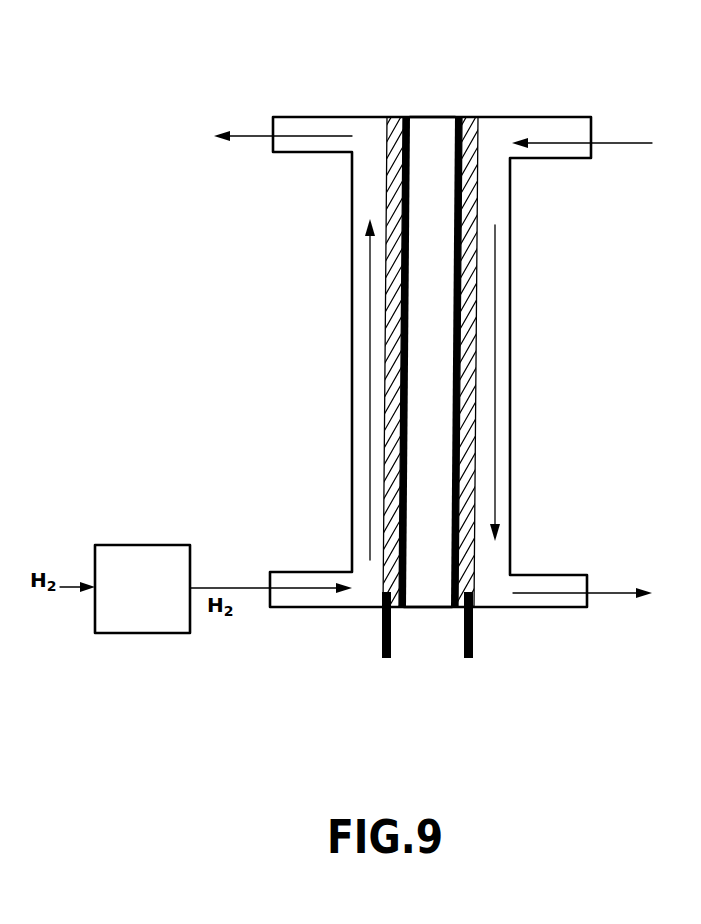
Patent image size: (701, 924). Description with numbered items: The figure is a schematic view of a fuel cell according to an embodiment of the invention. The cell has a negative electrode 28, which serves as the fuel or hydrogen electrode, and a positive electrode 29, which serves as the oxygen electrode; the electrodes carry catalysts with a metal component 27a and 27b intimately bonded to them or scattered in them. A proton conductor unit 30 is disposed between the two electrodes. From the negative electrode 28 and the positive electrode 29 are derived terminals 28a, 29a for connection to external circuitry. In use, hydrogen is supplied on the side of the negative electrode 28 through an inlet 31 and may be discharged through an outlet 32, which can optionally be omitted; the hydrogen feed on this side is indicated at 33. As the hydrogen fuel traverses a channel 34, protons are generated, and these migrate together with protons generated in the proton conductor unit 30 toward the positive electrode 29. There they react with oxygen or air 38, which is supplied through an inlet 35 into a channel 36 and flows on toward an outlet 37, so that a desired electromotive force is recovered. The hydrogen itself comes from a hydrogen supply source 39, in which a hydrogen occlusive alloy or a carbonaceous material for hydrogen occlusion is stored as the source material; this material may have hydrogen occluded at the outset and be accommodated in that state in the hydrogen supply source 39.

The metal component 27a is at (403, 182).
The metal component 27b is at (462, 216).
The negative electrode 28 is at (396, 290).
The terminal 28a is at (393, 652).
The positive electrode 29 is at (474, 174).
The terminal 29a is at (474, 655).
The proton conductor unit 30 is at (428, 135).
The inlet 31 is at (302, 594).
The outlet 32 is at (300, 128).
The hydrogen inlet 33 is at (250, 583).
The channel 34 is at (380, 411).
The inlet 35 is at (555, 138).
The channel 36 is at (484, 401).
The outlet 37 is at (563, 588).
The oxygen (air) 38 is at (628, 146).
The hydrogen supply source 39 is at (140, 555).